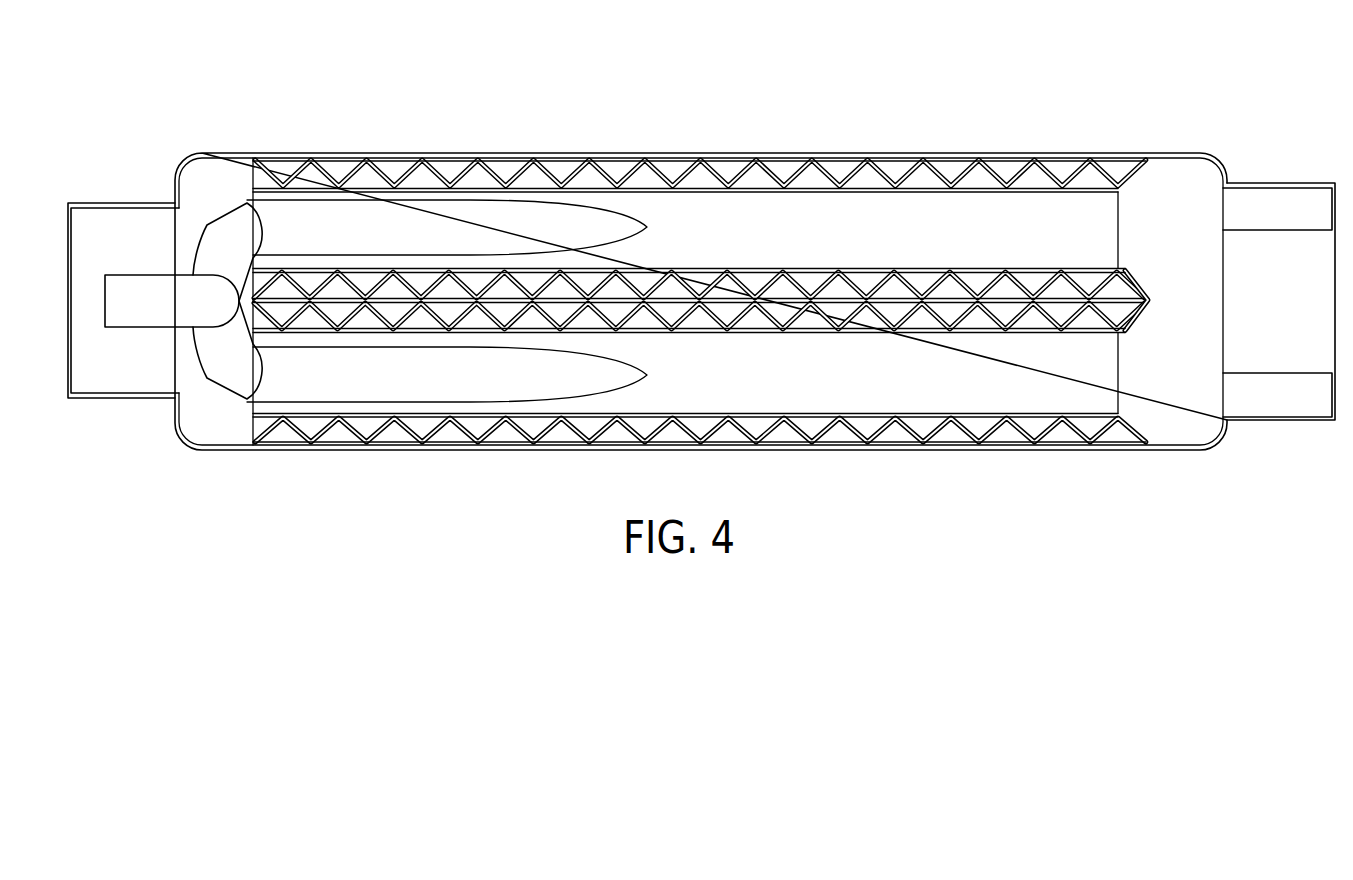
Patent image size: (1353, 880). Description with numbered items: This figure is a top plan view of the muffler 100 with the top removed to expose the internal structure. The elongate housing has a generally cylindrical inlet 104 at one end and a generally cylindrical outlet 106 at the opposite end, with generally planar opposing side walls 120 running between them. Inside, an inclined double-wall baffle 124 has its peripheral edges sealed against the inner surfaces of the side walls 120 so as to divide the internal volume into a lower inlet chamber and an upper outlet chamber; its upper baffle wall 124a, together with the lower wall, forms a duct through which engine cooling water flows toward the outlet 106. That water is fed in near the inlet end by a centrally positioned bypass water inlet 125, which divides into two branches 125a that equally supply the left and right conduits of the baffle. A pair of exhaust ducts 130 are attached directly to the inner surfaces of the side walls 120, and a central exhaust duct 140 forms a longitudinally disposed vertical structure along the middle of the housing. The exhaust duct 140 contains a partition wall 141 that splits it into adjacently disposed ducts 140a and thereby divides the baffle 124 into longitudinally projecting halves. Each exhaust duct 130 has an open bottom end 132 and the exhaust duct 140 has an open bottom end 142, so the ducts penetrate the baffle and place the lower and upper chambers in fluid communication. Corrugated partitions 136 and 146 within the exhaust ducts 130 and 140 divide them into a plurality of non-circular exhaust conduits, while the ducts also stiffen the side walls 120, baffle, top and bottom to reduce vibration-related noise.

The muffler 100 is at (701, 271).
The inlet 104 is at (118, 203).
The outlet 106 is at (1283, 183).
The side wall 120 is at (220, 152).
The double-wall baffle 124 is at (922, 210).
The upper baffle wall 124a is at (828, 240).
The bypass water inlet 125 is at (132, 272).
The branch 125a is at (450, 240).
The exhaust duct 130 is at (699, 306).
The open bottom end 132 is at (675, 167).
The corrugated partition 136 is at (793, 172).
The exhaust duct 140 is at (735, 286).
The duct 140a is at (1130, 280).
The partition wall 141 is at (1142, 290).
The open bottom end 142 is at (700, 268).
The corrugated partition 146 is at (980, 212).